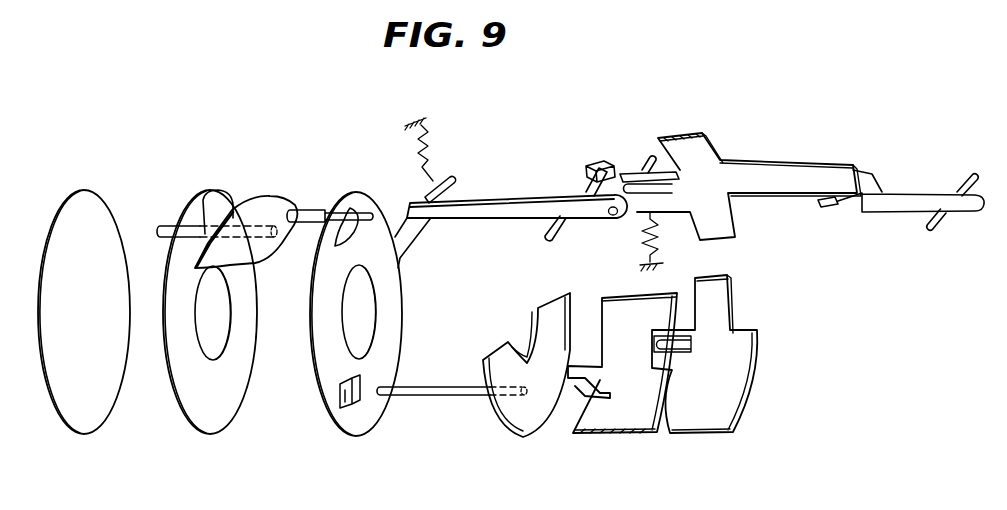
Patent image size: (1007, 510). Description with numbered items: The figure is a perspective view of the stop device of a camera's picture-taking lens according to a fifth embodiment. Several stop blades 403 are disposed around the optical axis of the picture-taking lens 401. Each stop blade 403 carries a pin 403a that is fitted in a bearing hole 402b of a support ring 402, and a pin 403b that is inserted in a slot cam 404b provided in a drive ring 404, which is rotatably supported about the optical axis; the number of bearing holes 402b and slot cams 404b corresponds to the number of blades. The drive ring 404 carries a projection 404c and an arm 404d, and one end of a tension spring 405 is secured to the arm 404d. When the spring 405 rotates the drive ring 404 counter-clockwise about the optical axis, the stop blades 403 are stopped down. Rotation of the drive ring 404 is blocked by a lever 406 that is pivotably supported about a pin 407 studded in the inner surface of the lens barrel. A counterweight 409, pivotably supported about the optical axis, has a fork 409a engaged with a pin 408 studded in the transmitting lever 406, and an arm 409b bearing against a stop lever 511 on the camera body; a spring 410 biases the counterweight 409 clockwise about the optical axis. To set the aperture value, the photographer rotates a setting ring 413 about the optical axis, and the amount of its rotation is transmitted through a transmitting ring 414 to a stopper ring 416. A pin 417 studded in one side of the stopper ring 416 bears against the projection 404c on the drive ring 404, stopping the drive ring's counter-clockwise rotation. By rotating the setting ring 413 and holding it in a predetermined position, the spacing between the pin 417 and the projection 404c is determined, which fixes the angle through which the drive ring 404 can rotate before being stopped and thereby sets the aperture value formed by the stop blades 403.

The picture-taking lens 401 is at (91, 418).
The support ring 402 is at (208, 418).
The bearing hole 402b is at (212, 192).
The stop blade 403 is at (271, 206).
The pin 403a is at (213, 228).
The pin 403b is at (307, 212).
The drive ring 404 is at (356, 428).
The slot cam 404b is at (356, 210).
The projection 404c is at (367, 402).
The arm 404d is at (448, 181).
The tension spring 405 is at (435, 140).
The lever 406 is at (500, 190).
The pin 407 is at (583, 180).
The pin 408 is at (640, 168).
The counterweight 409 is at (705, 152).
The fork 409a is at (643, 192).
The arm 409b is at (798, 172).
The spring 410 is at (658, 243).
The setting ring 413 is at (755, 377).
The transmitting ring 414 is at (627, 420).
The stopper ring 416 is at (522, 423).
The pin 417 is at (430, 388).
The stop lever 511 is at (905, 198).